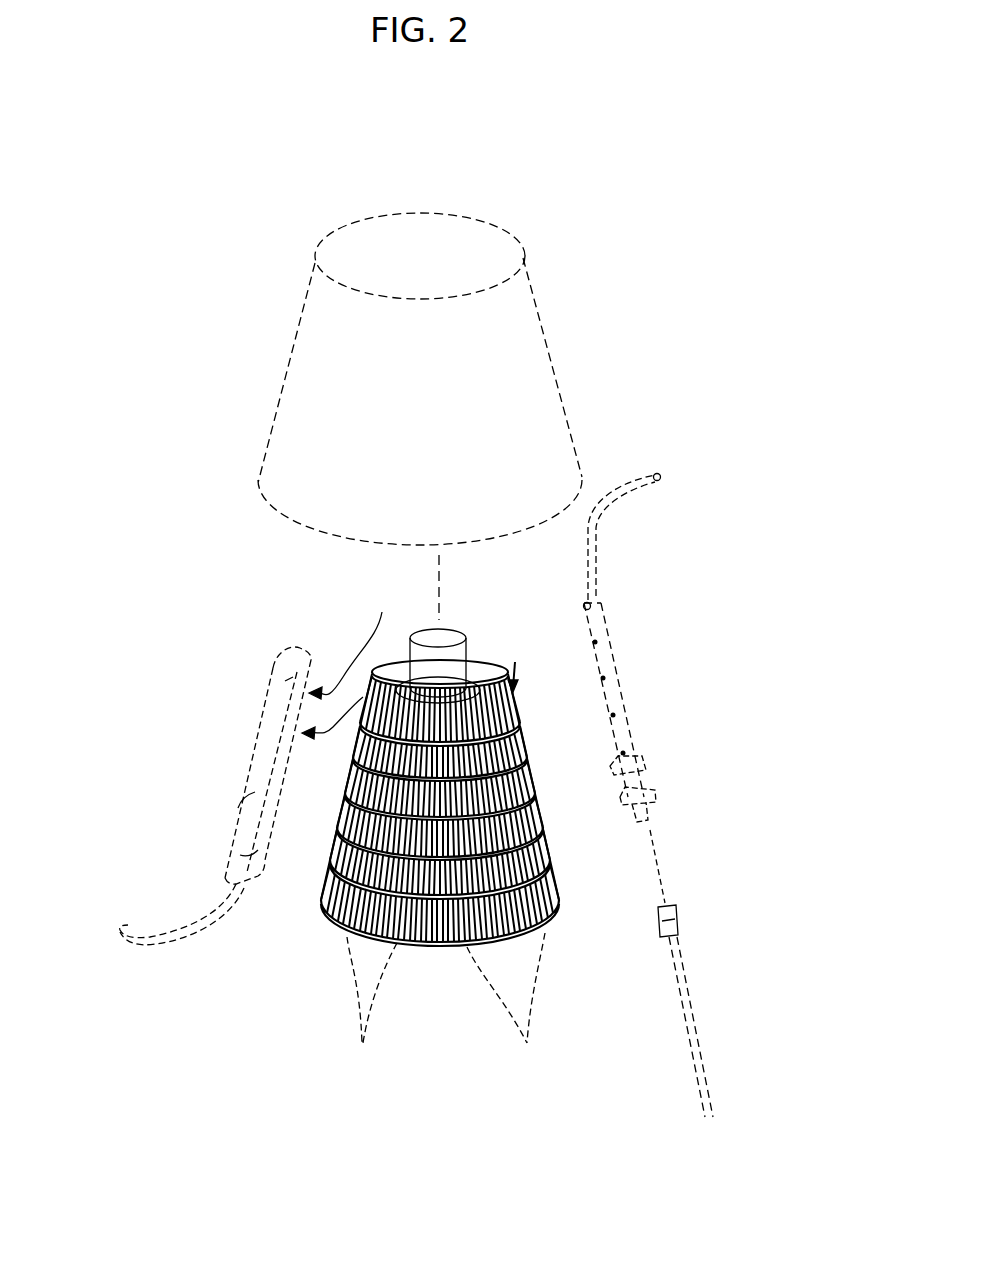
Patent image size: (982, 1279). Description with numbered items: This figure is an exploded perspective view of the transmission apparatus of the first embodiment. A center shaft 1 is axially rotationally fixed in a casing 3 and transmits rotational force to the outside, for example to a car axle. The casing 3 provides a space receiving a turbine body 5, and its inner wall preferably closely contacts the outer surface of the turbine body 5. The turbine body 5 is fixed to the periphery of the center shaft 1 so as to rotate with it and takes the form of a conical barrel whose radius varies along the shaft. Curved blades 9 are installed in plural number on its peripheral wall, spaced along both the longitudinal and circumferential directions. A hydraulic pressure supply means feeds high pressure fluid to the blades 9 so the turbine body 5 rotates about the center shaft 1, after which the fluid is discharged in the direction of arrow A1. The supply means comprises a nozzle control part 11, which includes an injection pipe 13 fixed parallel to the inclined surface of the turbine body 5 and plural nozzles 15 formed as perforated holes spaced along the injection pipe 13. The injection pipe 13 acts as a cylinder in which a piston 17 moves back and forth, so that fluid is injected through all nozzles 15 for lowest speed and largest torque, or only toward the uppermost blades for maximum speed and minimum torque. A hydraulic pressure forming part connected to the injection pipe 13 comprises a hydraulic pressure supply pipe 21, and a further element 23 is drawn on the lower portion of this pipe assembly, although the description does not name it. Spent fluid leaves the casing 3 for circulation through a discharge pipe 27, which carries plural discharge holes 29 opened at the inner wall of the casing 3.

The center shaft 1 is at (410, 947).
The casing 3 is at (537, 437).
The turbine body 5 is at (450, 629).
The blades 9 is at (372, 1016).
The nozzle control part 11 is at (702, 796).
The injection pipe 13 is at (594, 624).
The nozzles 15 is at (644, 800).
The piston 17 is at (675, 917).
The hydraulic pressure supply pipe 21 is at (593, 541).
The lower pole 23 is at (680, 959).
The discharge pipe 27 is at (240, 732).
The discharge holes 29 is at (236, 840).
The arrow direction of fluid discharge A1 is at (353, 662).